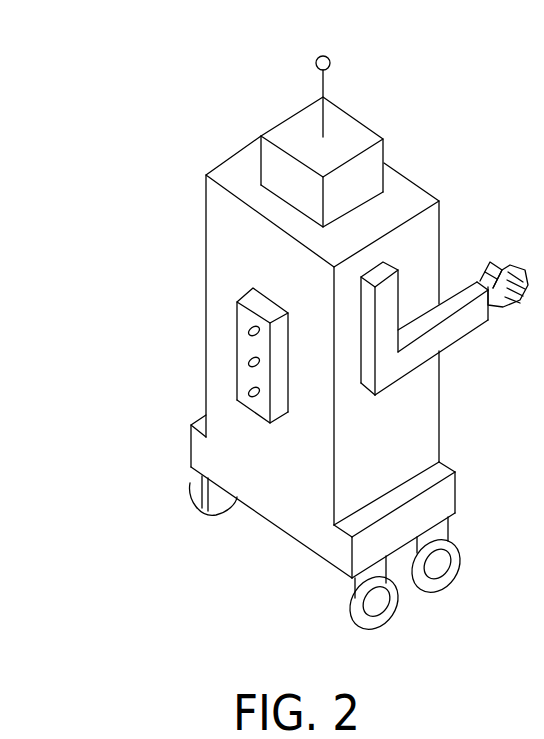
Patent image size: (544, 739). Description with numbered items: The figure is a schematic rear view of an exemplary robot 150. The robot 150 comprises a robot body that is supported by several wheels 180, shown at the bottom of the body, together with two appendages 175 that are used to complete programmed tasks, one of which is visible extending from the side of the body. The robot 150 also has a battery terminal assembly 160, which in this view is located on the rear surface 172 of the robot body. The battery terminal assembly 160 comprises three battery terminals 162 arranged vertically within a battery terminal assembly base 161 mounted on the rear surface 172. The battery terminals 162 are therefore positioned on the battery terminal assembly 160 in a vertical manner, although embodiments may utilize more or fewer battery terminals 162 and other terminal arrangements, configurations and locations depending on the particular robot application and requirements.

The robot 150 is at (152, 102).
The battery terminal assembly 160 is at (252, 327).
The battery terminal assembly base 161 is at (278, 388).
The battery terminals 162 is at (236, 284).
The rear surface 172 is at (282, 480).
The appendages 175 is at (475, 330).
The wheels 180 is at (190, 500).